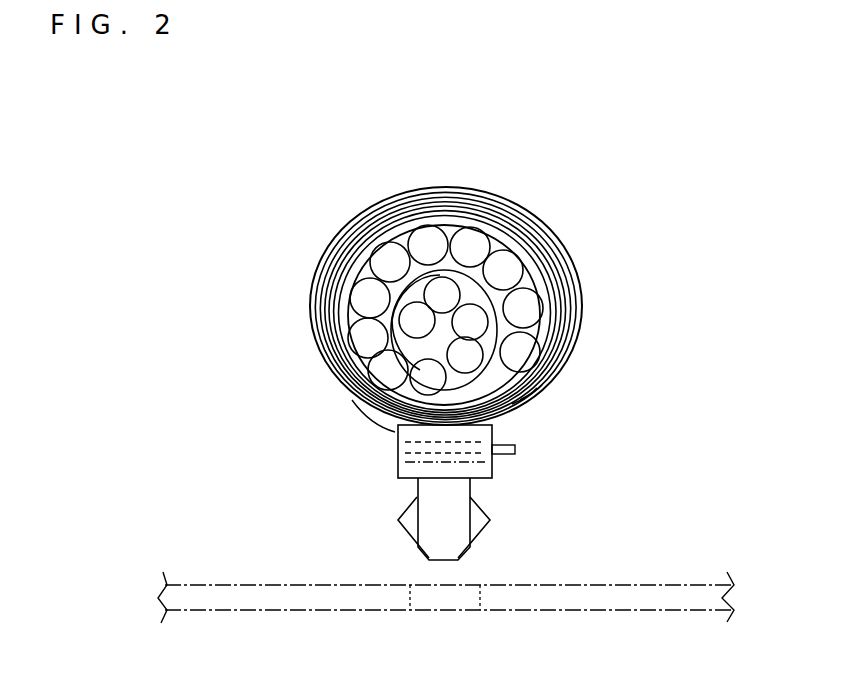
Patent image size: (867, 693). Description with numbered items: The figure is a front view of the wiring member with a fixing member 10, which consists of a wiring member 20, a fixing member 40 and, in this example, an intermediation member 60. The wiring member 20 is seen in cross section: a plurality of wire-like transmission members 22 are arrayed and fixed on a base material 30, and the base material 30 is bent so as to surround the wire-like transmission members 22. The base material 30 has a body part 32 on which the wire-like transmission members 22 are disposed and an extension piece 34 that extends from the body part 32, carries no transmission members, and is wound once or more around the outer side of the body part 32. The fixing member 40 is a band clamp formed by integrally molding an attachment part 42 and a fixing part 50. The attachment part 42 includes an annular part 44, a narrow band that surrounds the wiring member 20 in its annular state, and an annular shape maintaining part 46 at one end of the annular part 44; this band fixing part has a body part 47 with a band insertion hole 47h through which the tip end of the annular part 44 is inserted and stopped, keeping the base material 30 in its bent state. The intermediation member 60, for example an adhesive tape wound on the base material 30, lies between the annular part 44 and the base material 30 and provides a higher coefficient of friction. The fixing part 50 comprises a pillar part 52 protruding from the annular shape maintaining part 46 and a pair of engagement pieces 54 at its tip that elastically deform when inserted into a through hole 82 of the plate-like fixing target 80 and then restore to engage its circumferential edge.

The wiring member with a fixing member 10 is at (286, 140).
The wiring member 20 is at (541, 386).
The wire-like transmission members 22 is at (505, 262).
The base material 30 is at (560, 292).
The body part 32 is at (565, 338).
The extension piece 34 is at (448, 270).
The fixing member 40 is at (450, 501).
The attachment part 42 is at (443, 475).
The annular part 44 is at (377, 443).
The annular shape maintaining part 46 is at (398, 480).
The body part 47 is at (493, 470).
The band insertion hole 47h is at (494, 452).
The fixing part 50 is at (492, 527).
The pillar part 52 is at (470, 550).
The pair of engagement pieces 54 is at (485, 525).
The intermediation member 60 is at (374, 428).
The fixing target 80 is at (532, 612).
The through hole 82 is at (480, 612).